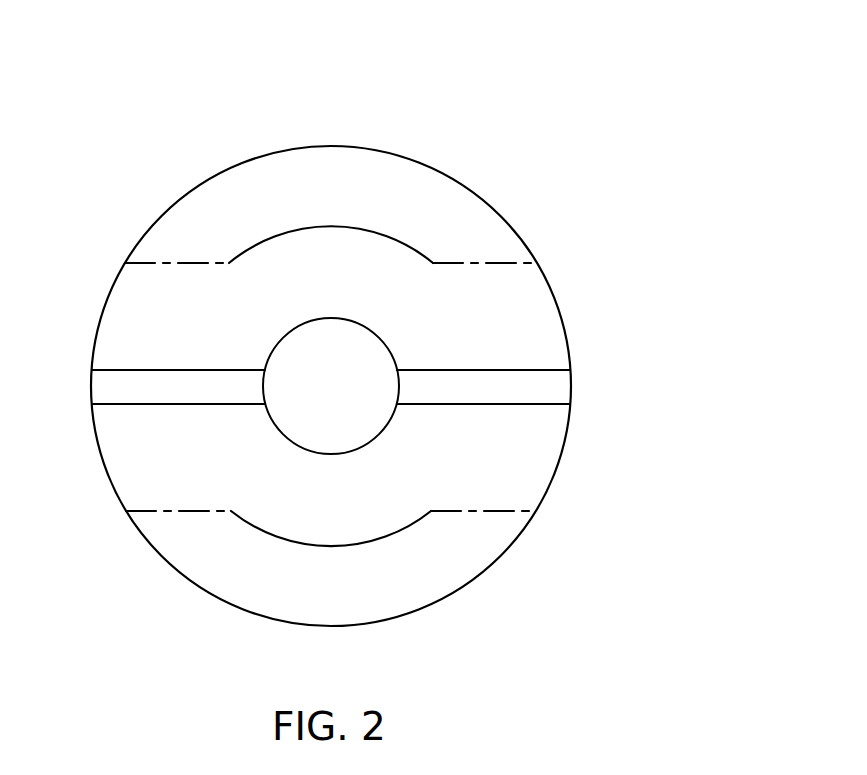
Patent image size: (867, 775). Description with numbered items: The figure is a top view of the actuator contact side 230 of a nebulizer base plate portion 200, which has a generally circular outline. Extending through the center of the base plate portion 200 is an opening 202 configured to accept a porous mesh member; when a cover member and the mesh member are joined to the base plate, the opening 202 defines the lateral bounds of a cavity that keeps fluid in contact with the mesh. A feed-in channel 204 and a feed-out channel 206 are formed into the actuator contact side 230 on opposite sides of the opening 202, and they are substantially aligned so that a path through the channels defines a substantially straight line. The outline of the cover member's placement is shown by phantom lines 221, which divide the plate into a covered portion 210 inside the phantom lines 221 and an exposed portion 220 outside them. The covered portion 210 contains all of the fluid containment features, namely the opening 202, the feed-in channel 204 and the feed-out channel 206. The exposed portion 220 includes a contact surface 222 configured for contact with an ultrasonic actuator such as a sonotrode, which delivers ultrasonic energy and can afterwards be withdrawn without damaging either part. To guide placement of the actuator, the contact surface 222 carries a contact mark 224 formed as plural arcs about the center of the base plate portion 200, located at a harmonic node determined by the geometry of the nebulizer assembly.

The nebulizer base plate portion 200 is at (575, 57).
The opening 202 is at (362, 356).
The feed-in channel 204 is at (122, 405).
The feed-out channel 206 is at (540, 370).
The covered portion 210 is at (510, 317).
The exposed portion 220 is at (446, 222).
The phantom lines 221 is at (160, 262).
The contact surface 222 is at (330, 155).
The contact mark 224 is at (402, 532).
The actuator contact side 230 is at (217, 222).